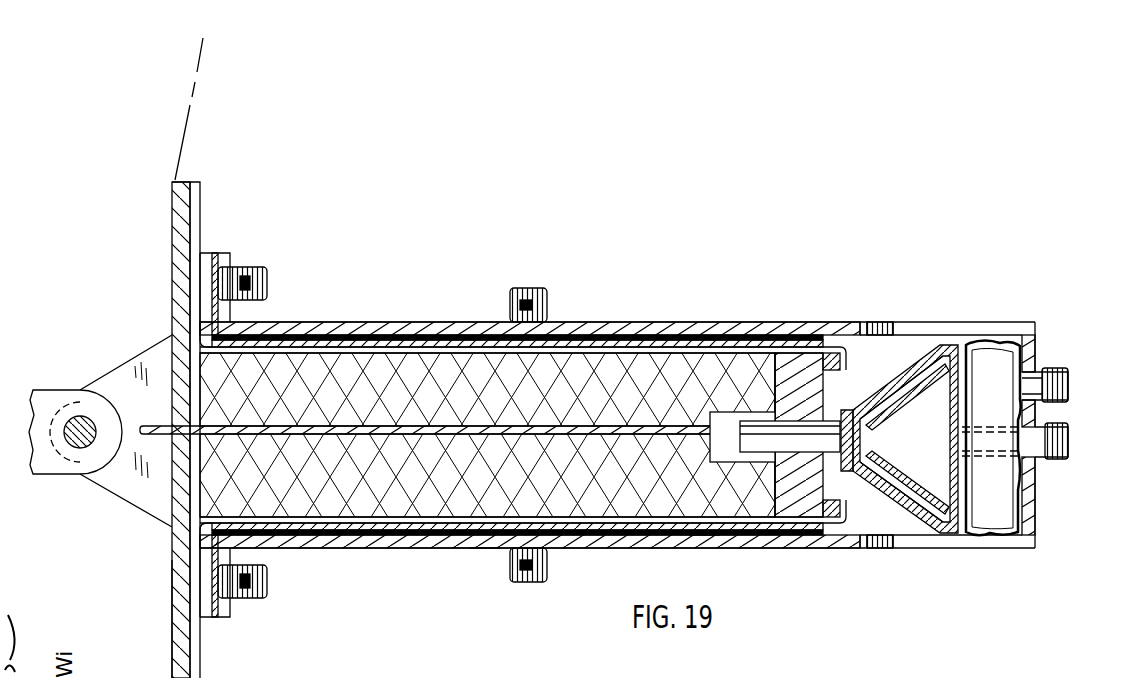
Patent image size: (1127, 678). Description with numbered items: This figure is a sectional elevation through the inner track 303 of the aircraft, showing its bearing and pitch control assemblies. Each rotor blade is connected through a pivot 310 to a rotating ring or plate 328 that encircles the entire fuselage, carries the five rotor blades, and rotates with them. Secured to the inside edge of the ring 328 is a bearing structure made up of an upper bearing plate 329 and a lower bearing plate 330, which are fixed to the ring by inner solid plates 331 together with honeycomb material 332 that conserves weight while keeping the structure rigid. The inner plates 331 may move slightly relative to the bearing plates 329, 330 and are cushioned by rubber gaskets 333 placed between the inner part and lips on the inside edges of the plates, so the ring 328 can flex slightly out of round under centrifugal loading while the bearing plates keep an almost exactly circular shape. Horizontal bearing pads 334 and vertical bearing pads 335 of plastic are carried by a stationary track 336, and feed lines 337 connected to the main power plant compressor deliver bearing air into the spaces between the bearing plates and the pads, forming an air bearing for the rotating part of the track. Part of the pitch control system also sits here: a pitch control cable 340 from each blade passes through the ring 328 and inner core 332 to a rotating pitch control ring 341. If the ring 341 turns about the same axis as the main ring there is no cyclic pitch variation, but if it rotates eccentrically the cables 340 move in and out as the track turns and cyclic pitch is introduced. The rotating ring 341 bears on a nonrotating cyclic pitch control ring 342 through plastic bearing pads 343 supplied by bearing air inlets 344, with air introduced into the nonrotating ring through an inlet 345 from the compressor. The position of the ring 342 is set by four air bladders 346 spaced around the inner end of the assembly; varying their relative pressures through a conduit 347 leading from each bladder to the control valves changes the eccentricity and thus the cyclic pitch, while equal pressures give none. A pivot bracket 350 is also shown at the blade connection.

The inner track 303 is at (172, 540).
The pivot 310 is at (80, 440).
The rotating ring 328 is at (188, 600).
The upper bearing plate 329 is at (695, 335).
The lower bearing plate 330 is at (703, 535).
The inner solid plates 331 is at (418, 332).
The honeycomb material 332 is at (478, 540).
The rubber gaskets 333 is at (832, 348).
The horizontal bearing pads 334 is at (352, 330).
The vertical bearing pads 335 is at (212, 258).
The stationary track 336 is at (478, 330).
The feed lines 337 is at (268, 292).
The pitch control cable 340 is at (165, 427).
The pitch control ring 341 is at (898, 535).
The nonrotating cyclic pitch control ring 342 is at (942, 344).
The plastic bearing pads 343 is at (884, 412).
The bearing air inlets 344 is at (892, 372).
The inlet 345 is at (1068, 448).
The air bladders 346 is at (994, 537).
The conduit 347 is at (1068, 386).
The pivot bracket 350 is at (44, 399).